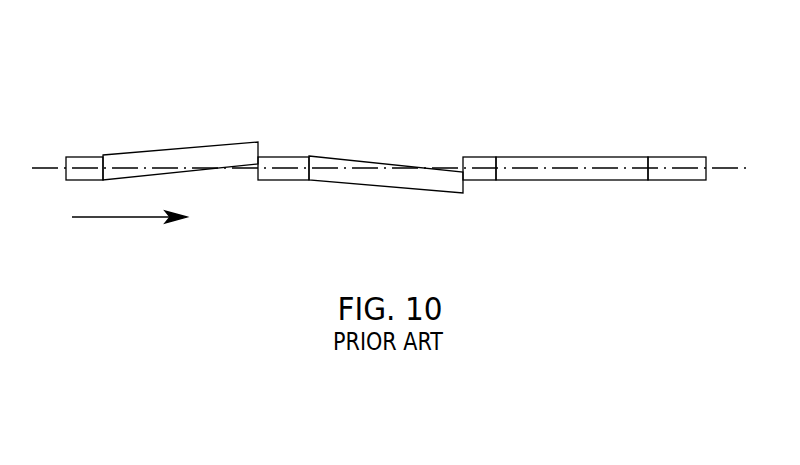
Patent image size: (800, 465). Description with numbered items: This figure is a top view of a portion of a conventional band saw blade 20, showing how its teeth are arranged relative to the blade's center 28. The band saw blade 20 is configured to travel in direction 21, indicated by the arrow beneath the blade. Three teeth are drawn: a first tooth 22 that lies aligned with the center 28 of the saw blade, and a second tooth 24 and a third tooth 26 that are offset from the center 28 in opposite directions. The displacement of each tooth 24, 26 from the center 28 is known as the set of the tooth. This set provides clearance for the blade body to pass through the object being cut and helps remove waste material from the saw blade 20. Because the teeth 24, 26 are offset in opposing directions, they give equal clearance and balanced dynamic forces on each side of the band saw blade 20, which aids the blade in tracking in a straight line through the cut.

The band saw blade 20 is at (449, 84).
The direction of travel 21 is at (119, 219).
The first tooth 22 is at (633, 163).
The second tooth 24 is at (436, 180).
The third tooth 26 is at (223, 152).
The center of the saw blade 28 is at (743, 170).